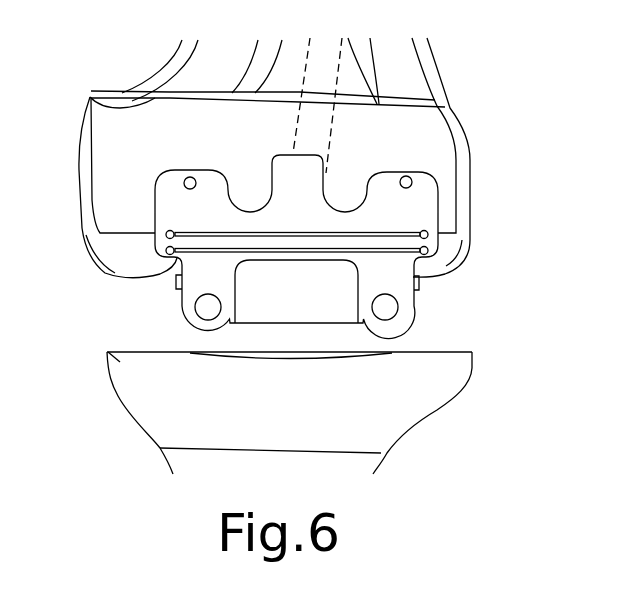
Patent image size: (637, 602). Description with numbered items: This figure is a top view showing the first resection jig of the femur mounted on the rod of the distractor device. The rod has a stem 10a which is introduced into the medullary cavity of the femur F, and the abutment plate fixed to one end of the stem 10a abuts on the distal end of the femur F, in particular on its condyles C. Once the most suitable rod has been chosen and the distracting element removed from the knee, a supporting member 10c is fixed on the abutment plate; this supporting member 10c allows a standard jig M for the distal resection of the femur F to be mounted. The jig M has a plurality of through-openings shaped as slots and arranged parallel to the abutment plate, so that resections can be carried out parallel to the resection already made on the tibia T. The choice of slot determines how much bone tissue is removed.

The femur F is at (91, 97).
The stem 10a is at (323, 89).
The condyle C is at (117, 270).
The supporting member 10c is at (317, 306).
The standard jig M is at (410, 318).
The tibia T is at (108, 352).